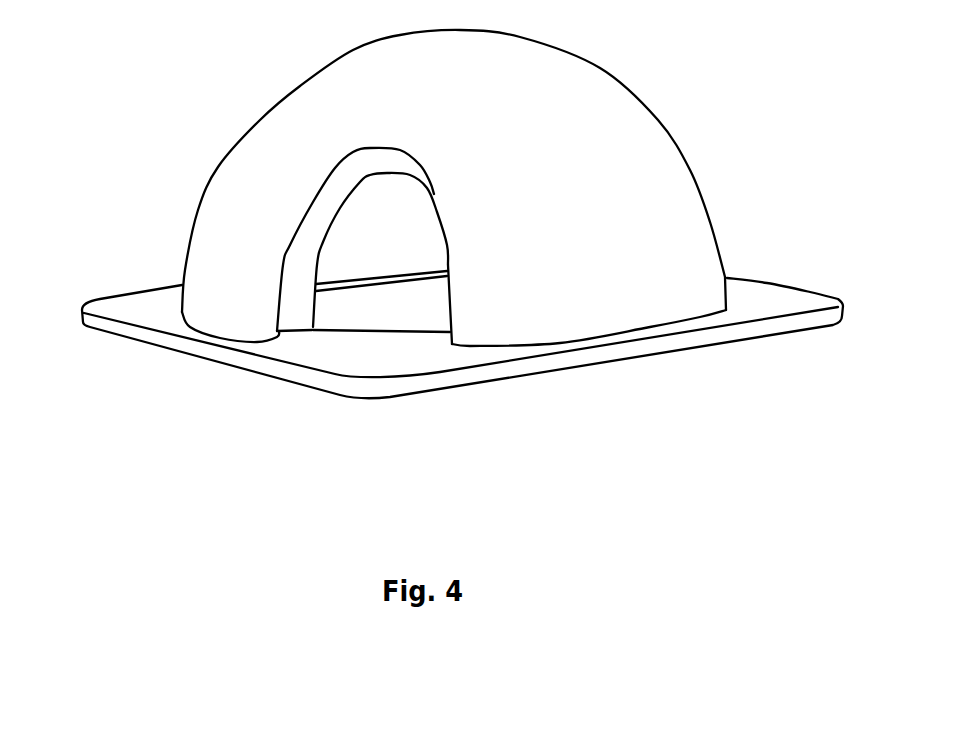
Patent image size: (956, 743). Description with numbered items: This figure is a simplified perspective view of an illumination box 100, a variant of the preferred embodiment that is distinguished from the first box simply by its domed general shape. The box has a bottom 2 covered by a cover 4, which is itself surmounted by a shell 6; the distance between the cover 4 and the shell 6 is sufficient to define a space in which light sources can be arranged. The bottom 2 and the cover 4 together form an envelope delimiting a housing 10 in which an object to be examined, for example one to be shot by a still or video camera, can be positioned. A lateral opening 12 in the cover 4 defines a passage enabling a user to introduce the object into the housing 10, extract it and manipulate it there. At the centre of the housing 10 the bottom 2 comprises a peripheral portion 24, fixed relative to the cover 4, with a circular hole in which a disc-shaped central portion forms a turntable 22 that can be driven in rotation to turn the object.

The illumination box 100 is at (230, 517).
The bottom 2 is at (146, 355).
The cover 4 is at (313, 233).
The shell 6 is at (267, 140).
The housing 10 is at (408, 258).
The lateral opening 12 is at (310, 326).
The turntable 22 is at (400, 316).
The peripheral portion 24 is at (373, 334).